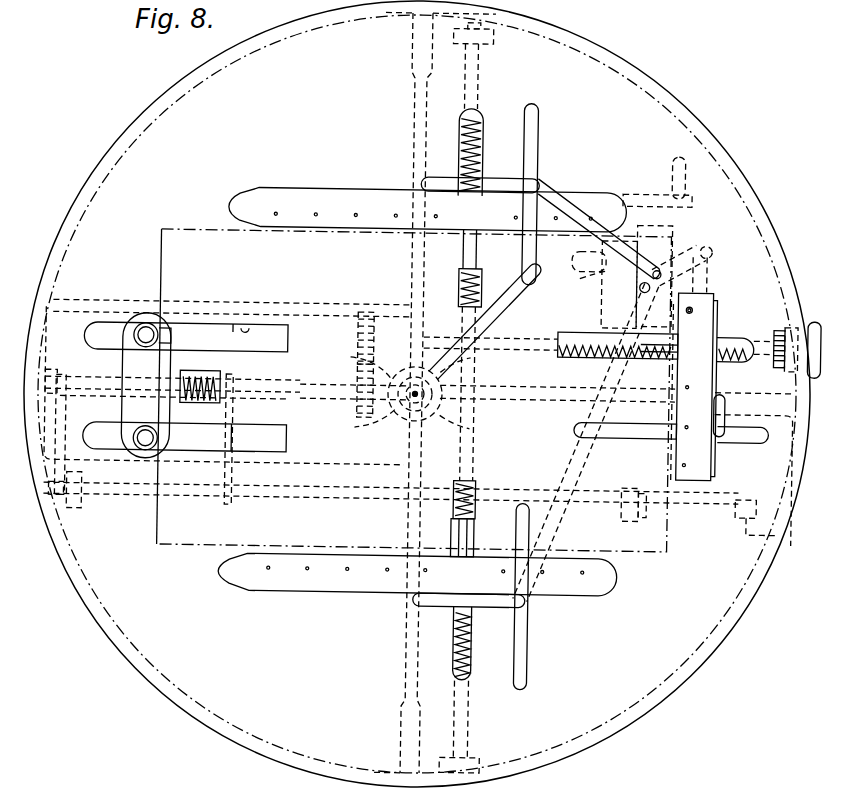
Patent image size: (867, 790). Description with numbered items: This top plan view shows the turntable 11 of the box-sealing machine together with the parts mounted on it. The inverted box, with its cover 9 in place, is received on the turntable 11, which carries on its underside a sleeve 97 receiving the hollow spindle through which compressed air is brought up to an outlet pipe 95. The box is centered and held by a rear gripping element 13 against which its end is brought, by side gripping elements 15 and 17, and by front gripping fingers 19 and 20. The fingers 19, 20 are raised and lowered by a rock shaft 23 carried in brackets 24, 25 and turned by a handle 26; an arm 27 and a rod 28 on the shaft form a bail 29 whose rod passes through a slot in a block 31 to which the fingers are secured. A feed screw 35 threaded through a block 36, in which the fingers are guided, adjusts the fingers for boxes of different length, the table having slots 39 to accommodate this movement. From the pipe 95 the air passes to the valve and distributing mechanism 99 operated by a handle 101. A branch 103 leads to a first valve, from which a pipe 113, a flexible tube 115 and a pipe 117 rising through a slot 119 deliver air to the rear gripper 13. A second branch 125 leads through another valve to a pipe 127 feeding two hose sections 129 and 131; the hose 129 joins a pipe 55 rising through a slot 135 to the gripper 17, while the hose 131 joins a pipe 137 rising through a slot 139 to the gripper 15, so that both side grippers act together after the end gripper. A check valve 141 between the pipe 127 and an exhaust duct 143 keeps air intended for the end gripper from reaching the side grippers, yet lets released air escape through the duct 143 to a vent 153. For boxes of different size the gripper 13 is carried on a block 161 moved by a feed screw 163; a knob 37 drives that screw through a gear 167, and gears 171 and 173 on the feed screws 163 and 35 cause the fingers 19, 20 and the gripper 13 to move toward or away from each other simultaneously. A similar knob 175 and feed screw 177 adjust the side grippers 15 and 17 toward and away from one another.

The cover 9 is at (194, 550).
The turntable 11 is at (172, 122).
The rear gripping element 13 is at (700, 378).
The side gripping element 15 is at (276, 581).
The side gripping element 17 is at (344, 200).
The front gripping finger 19 is at (144, 333).
The front gripping finger 20 is at (147, 450).
The rock shaft 23 is at (708, 501).
The bracket 24 is at (624, 505).
The bracket 25 is at (86, 513).
The handle 26 is at (233, 448).
The arm 27 is at (72, 425).
The rod 28 is at (94, 381).
The bail 29 is at (245, 419).
The block 31 is at (172, 343).
The feed screw 35 is at (318, 403).
The block 36 is at (122, 347).
The knob 37 is at (812, 316).
The slots 39 is at (244, 327).
The pipe 55 is at (489, 185).
The outlet pipe 95 is at (504, 301).
The sleeve 97 is at (433, 418).
The air valve and distributing mechanism 99 is at (643, 228).
The handle 101 is at (659, 191).
The branch 103 is at (570, 258).
The pipe 113 is at (659, 246).
The flexible tube 115 is at (707, 265).
The pipe 117 is at (726, 412).
The slot 119 is at (747, 438).
The branch 125 is at (584, 275).
The pipe 127 is at (716, 238).
The hose section 129 is at (573, 203).
The hose section 131 is at (565, 480).
The slot 135 is at (521, 105).
The pipe 137 is at (443, 602).
The slot 139 is at (531, 658).
The check valve 141 is at (637, 285).
The duct 143 is at (712, 296).
The vent 153 is at (597, 295).
The block 161 is at (655, 351).
The feed screw 163 is at (571, 350).
The gear 167 is at (773, 330).
The gear 171 is at (356, 326).
The gear 173 is at (355, 379).
The knob 175 is at (501, 774).
The feed screw 177 is at (462, 635).